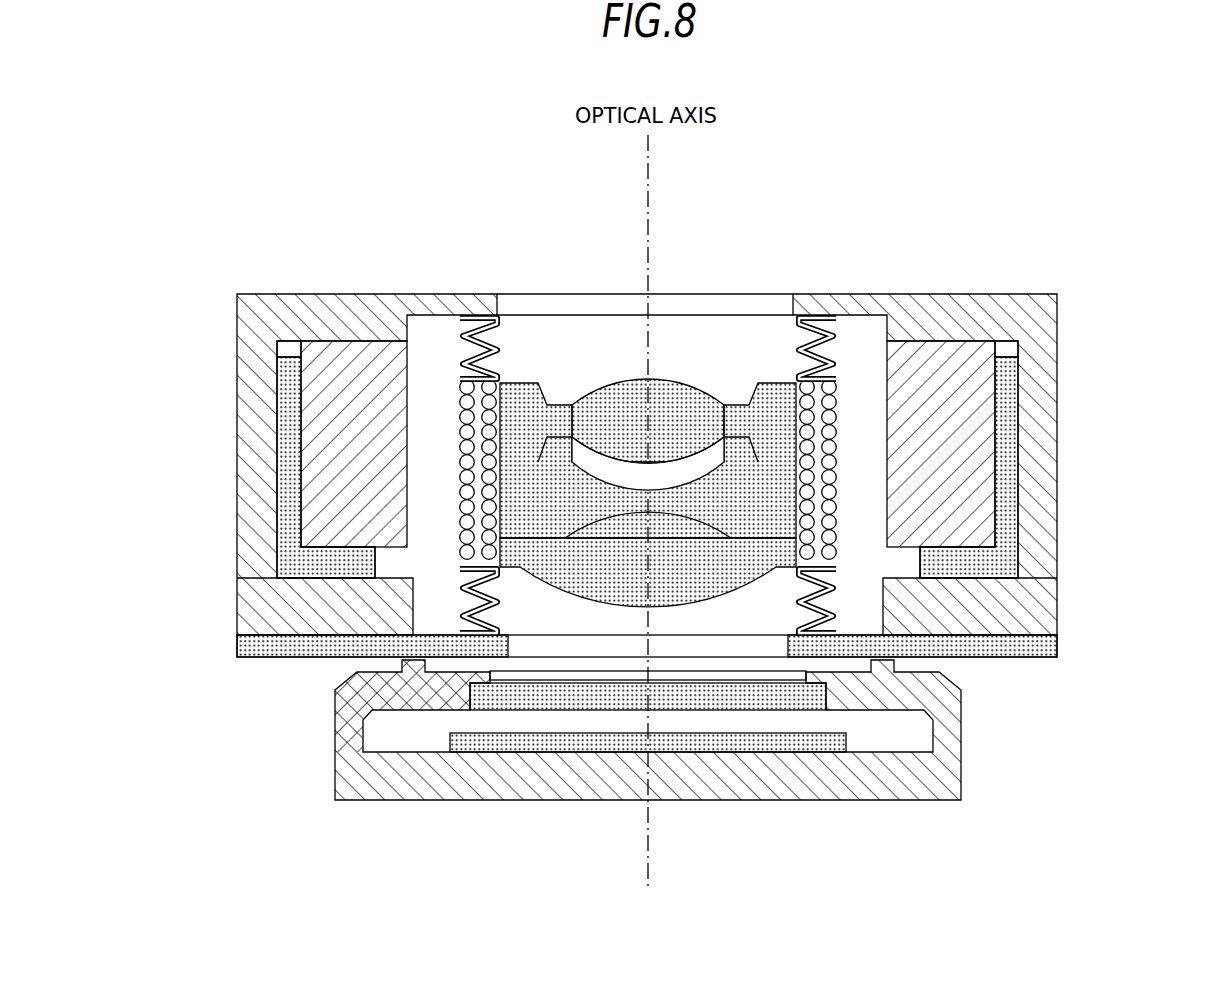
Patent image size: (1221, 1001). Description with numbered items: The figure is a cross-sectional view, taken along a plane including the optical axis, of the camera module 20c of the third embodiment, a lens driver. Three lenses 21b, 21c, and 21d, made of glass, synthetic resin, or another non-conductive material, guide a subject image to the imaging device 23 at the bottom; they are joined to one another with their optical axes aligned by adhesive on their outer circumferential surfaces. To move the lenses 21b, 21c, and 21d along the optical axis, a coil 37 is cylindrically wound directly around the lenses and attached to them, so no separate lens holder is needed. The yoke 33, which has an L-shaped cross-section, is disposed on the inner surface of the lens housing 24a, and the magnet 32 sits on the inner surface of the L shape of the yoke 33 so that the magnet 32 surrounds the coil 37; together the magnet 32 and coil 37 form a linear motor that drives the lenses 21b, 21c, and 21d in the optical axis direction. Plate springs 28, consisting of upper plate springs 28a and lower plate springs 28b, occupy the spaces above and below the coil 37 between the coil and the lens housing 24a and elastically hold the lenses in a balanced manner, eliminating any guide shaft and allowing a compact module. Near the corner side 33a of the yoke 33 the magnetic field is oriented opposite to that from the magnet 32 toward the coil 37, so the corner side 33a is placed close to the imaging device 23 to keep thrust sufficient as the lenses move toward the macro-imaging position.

The camera module 20c is at (918, 118).
The lens 21b is at (687, 403).
The lens 21c is at (570, 483).
The lens 21d is at (716, 578).
The imaging device 23 is at (487, 742).
The lens housing 24a is at (1040, 342).
The plate springs 28 is at (823, 417).
The upper plate springs 28a is at (838, 350).
The lower plate springs 28b is at (834, 590).
The magnet 32 is at (347, 372).
The yoke 33 is at (290, 418).
The corner side 33a is at (297, 568).
The coil 37 is at (462, 442).